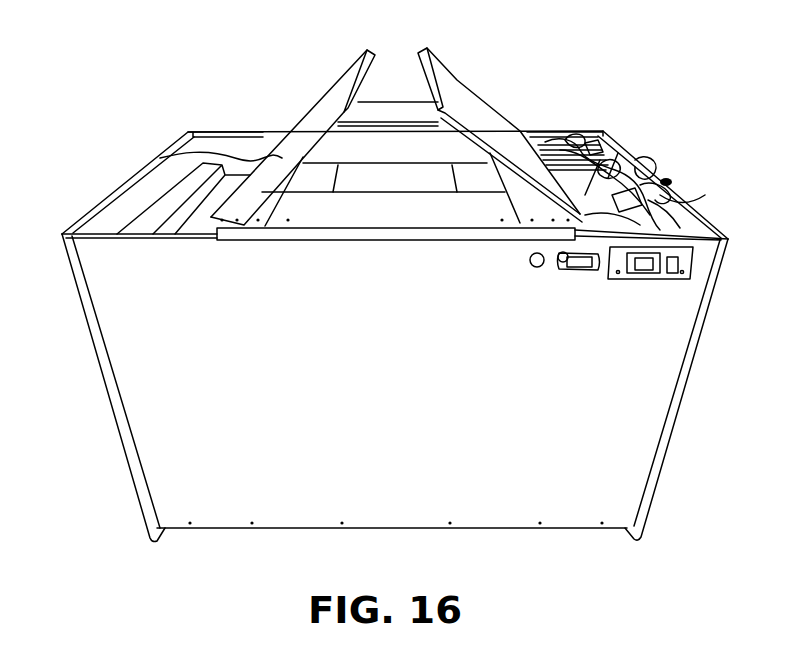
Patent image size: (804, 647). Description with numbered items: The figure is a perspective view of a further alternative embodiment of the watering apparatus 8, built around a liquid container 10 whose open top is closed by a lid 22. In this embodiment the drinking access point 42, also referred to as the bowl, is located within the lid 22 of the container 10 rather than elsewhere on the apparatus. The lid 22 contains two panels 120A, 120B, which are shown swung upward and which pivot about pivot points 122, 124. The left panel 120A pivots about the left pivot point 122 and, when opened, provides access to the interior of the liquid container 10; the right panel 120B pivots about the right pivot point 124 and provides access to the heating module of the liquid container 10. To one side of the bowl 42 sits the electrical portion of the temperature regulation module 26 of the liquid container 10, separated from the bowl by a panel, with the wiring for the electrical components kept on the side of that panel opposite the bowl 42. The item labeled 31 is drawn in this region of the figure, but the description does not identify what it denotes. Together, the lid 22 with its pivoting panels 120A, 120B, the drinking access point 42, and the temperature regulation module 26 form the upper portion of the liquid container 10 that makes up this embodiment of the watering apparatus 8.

The watering apparatus 8 is at (100, 427).
The liquid container 10 is at (243, 514).
The lid 22 is at (160, 158).
The temperature regulation module 26 is at (669, 181).
The cables 31 is at (618, 152).
The drinking access point 42 is at (425, 158).
The left panel 120A is at (310, 117).
The right panel 120B is at (476, 103).
The left pivot point 122 is at (213, 225).
The right pivot point 124 is at (548, 197).